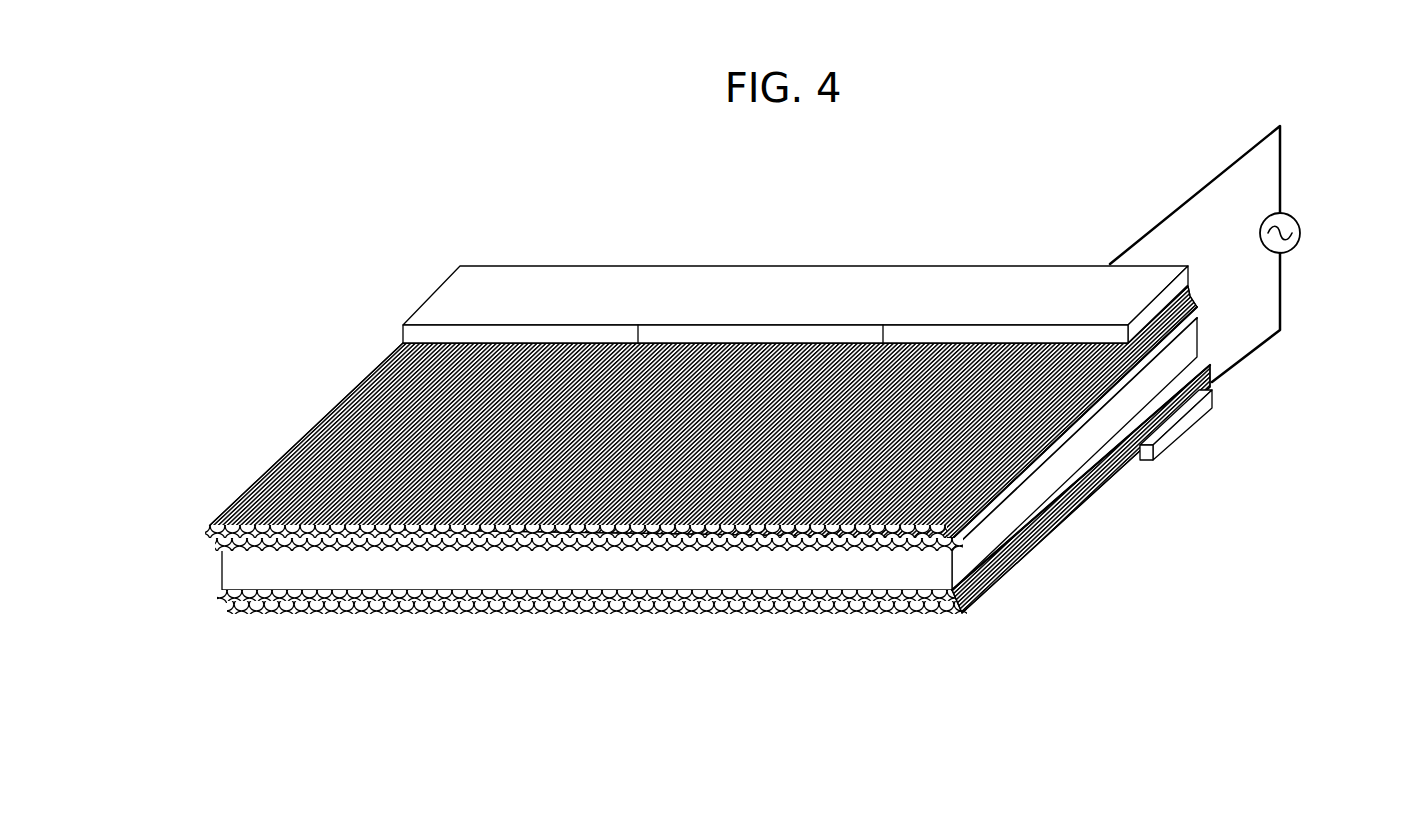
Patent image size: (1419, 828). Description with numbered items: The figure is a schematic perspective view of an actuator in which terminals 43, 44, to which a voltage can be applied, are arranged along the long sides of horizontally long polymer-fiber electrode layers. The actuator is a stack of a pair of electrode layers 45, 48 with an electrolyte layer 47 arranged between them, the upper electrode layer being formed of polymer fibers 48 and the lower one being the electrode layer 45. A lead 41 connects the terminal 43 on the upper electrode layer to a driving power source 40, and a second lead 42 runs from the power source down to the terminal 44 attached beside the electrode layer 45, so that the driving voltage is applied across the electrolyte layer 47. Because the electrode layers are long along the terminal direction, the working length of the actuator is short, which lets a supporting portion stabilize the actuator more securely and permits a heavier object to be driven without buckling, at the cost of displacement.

The driving power source 40 is at (1297, 213).
The lead 41 is at (1263, 133).
The lead wire to side electrode 42 is at (1268, 341).
The terminal 43 is at (823, 283).
The terminal 44 is at (1188, 417).
The electrode layer 45 is at (1037, 545).
The electrolyte layer 47 is at (732, 573).
The polymer fibers 48 is at (228, 513).